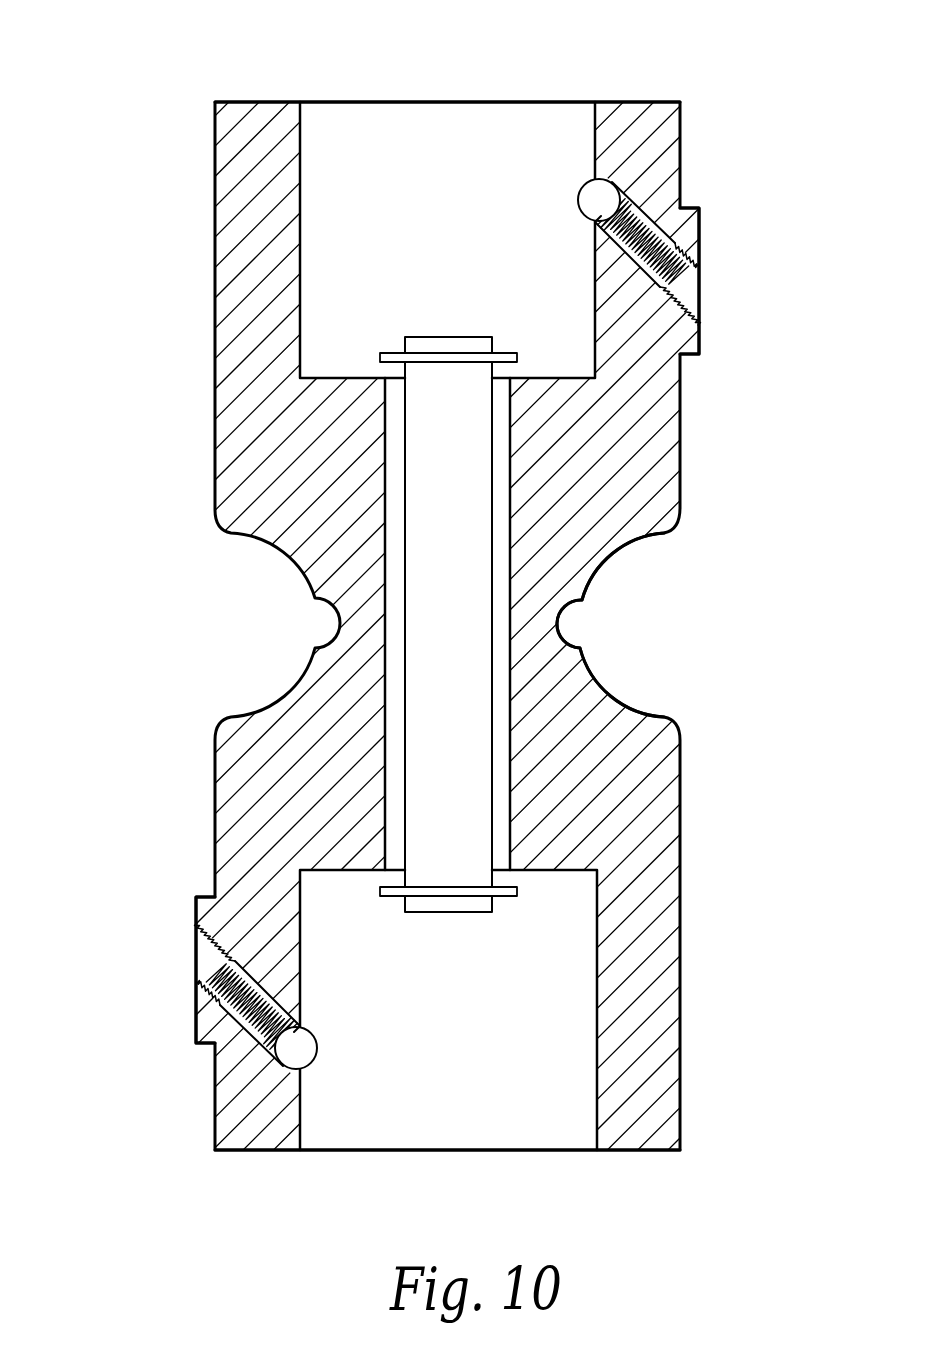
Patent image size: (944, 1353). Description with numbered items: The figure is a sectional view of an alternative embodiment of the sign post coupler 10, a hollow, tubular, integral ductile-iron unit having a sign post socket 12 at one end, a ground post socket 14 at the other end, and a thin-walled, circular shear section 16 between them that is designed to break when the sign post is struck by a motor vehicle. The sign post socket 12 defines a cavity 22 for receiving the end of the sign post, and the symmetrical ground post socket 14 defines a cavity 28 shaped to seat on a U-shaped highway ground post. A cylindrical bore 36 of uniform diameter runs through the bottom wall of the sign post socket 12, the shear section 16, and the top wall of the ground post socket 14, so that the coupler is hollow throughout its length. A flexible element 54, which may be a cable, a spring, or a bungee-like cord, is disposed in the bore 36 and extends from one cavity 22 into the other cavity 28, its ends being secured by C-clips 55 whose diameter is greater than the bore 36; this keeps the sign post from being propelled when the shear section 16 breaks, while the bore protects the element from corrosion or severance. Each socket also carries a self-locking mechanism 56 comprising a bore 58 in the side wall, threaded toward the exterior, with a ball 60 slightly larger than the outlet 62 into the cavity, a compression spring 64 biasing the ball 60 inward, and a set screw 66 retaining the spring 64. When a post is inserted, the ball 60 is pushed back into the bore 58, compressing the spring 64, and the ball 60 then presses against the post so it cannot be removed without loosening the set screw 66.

The sign post coupler 10 is at (238, 577).
The sign post socket 12 is at (215, 158).
The ground post socket 14 is at (690, 1047).
The shear section 16 is at (634, 635).
The cavity 22 is at (470, 92).
The cavity 28 is at (371, 1158).
The cylindrical bore 36 is at (512, 568).
The flexible element 54 is at (450, 336).
The C-clips 55 is at (520, 357).
The self-locking mechanism 56 is at (738, 319).
The bore 58 is at (685, 243).
The ball 60 is at (579, 196).
The outlet 62 is at (594, 222).
The compression spring 64 is at (622, 212).
The set screw 66 is at (680, 274).